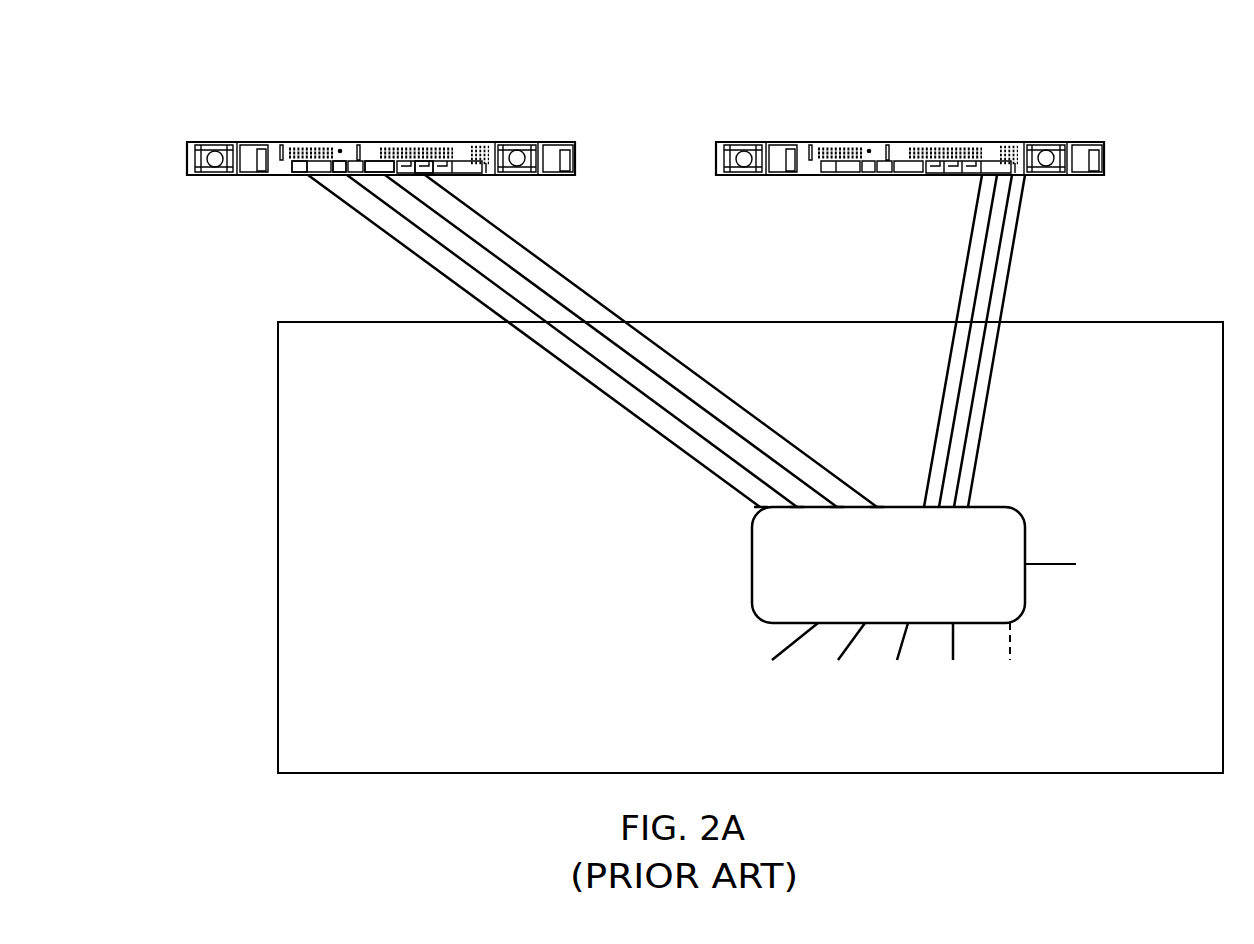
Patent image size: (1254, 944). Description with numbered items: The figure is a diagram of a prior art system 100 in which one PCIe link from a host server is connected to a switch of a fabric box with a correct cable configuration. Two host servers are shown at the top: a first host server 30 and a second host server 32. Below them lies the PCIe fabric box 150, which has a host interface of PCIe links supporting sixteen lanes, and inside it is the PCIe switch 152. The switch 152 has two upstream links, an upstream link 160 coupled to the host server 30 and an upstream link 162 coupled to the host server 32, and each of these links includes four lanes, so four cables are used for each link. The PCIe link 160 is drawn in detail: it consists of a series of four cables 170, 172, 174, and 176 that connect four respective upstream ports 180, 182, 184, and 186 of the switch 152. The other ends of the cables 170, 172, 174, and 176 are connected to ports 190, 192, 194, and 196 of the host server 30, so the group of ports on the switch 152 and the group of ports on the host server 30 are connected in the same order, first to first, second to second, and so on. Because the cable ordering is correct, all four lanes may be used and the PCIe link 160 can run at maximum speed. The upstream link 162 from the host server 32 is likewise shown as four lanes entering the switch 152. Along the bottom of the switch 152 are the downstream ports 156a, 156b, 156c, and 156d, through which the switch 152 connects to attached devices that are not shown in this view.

The prior art computing system 100 is at (1120, 97).
The host server 30 is at (374, 103).
The host server 32 is at (938, 140).
The port 190 is at (298, 142).
The port 192 is at (342, 142).
The port 194 is at (390, 142).
The port 196 is at (430, 142).
The upstream link 160 is at (518, 341).
The upstream link 162 is at (1028, 210).
The cable 170 is at (347, 204).
The cable 172 is at (407, 219).
The cable 174 is at (449, 222).
The cable 176 is at (511, 238).
The fabric box 150 is at (278, 508).
The PCIe switch 152 is at (885, 559).
The upstream port 180 is at (762, 507).
The upstream port 182 is at (797, 506).
The upstream port 184 is at (837, 506).
The upstream port 186 is at (880, 506).
The downstream port 156a is at (820, 625).
The downstream port 156b is at (862, 625).
The downstream port 156c is at (910, 625).
The downstream port 156d is at (960, 625).